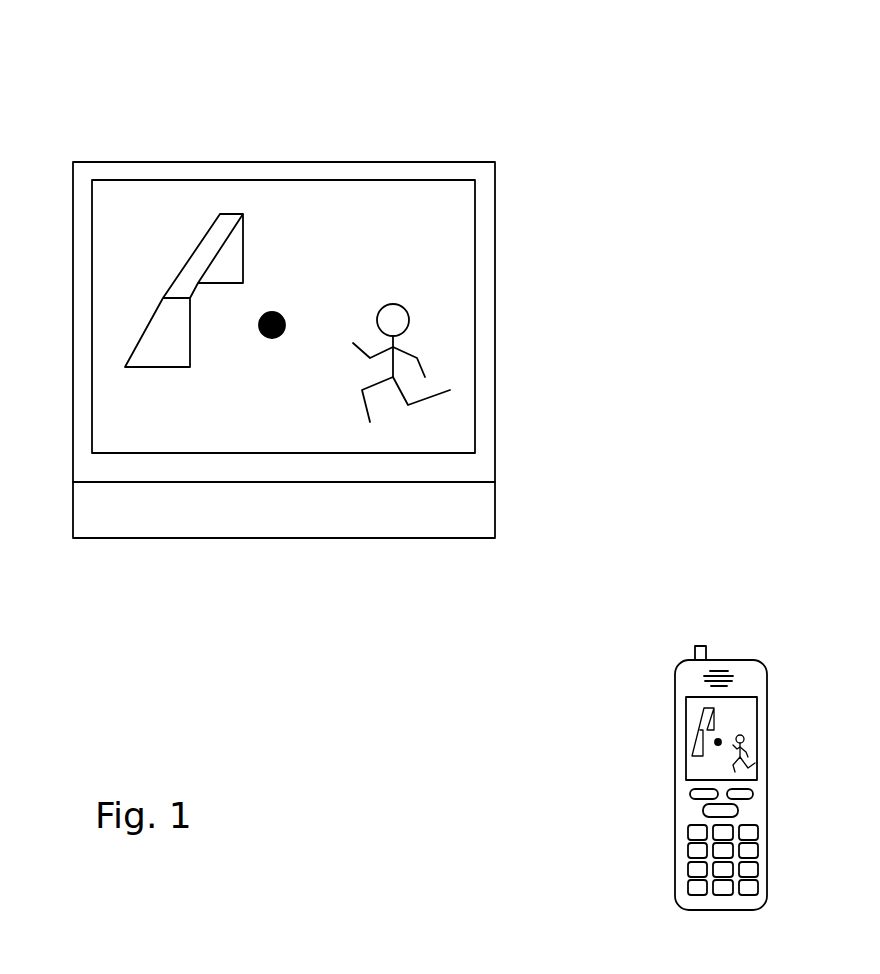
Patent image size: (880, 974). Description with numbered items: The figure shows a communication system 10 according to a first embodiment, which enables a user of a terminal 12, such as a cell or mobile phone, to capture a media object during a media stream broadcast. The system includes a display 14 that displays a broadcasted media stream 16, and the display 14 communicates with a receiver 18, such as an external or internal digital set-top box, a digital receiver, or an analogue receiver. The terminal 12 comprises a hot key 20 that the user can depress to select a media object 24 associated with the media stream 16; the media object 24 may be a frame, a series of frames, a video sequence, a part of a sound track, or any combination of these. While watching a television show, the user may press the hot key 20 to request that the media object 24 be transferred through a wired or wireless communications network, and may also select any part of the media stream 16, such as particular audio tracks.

The communication system 10 is at (434, 470).
The terminal 12 is at (745, 673).
The display 14 is at (350, 161).
The broadcasted media stream 16 is at (170, 235).
The receiver 18 is at (172, 520).
The hot key 20 is at (717, 807).
The media object 24 is at (707, 768).